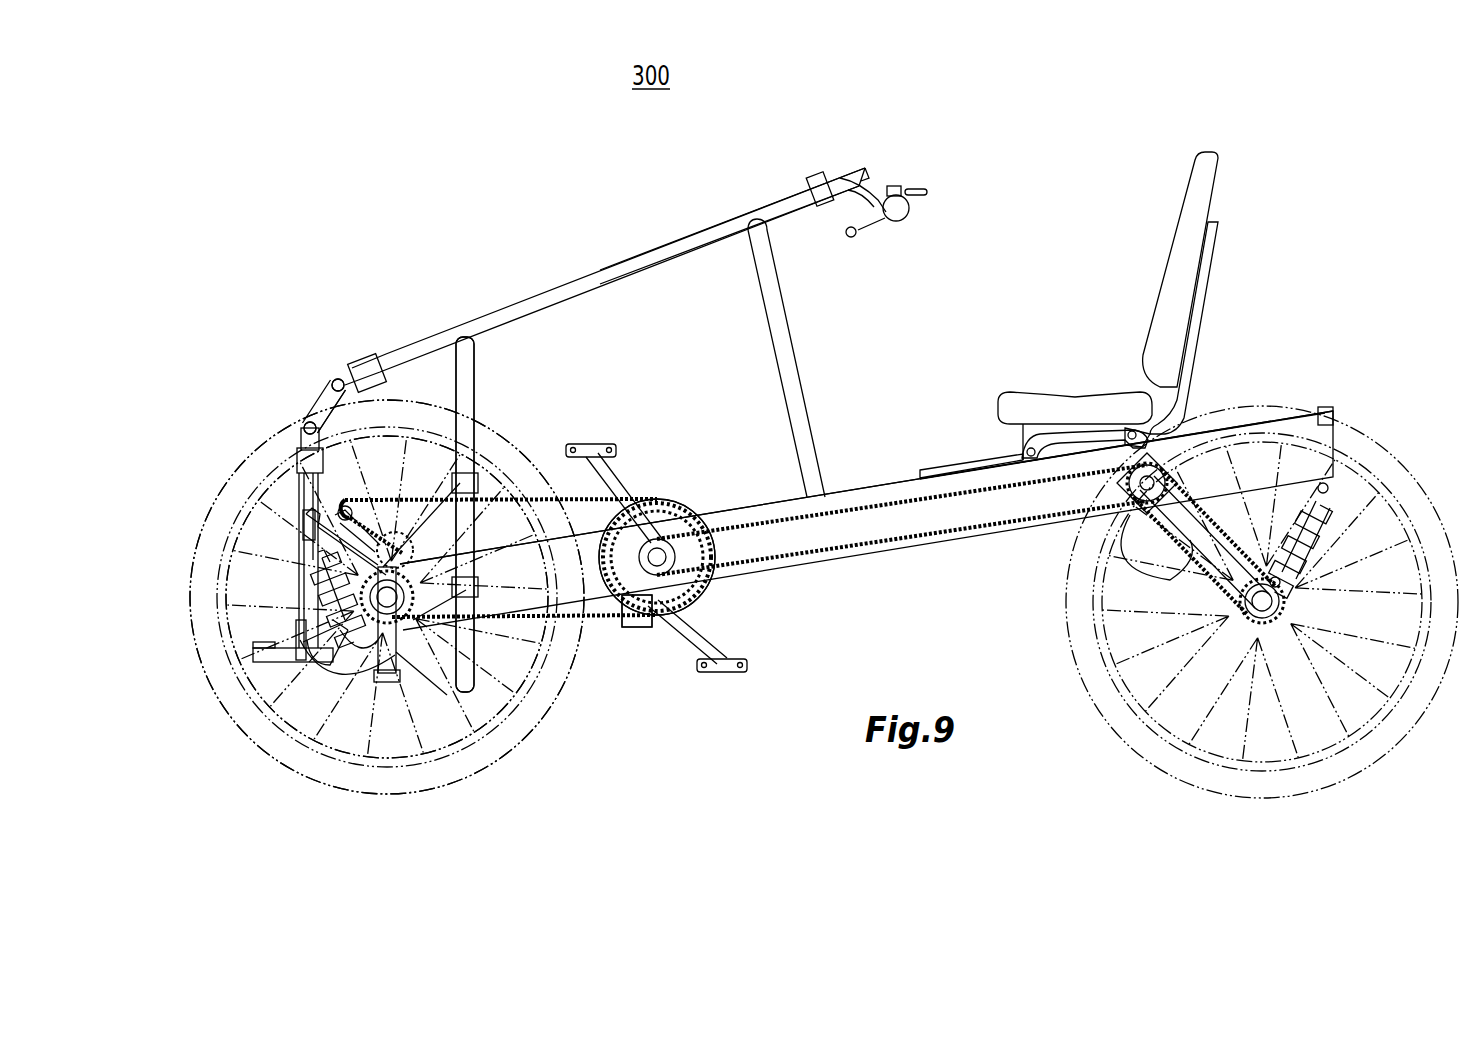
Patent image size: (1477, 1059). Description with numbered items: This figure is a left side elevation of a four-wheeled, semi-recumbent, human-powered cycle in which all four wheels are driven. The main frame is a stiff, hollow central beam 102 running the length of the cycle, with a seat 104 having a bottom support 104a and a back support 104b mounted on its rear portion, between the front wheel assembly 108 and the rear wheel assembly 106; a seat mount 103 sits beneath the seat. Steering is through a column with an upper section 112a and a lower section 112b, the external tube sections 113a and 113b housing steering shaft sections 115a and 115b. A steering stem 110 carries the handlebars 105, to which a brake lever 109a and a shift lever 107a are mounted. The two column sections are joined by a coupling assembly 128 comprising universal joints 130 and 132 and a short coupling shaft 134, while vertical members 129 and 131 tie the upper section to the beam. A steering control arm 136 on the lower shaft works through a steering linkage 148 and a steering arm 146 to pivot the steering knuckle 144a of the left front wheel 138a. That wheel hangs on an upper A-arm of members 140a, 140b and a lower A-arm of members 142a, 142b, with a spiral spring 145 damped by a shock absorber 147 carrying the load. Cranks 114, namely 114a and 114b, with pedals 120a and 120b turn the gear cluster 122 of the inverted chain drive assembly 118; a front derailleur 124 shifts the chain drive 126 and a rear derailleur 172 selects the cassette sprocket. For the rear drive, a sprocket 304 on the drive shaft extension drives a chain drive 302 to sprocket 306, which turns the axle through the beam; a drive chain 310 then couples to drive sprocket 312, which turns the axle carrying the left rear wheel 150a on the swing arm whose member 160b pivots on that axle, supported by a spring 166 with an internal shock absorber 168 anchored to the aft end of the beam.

The central beam 102 is at (893, 483).
The seat mount 103 is at (970, 462).
The seat 104 is at (1098, 289).
The bottom support 104a is at (1045, 392).
The back support 104b is at (1178, 220).
The handlebars 105 is at (922, 222).
The rear wheel assembly 106 is at (1378, 430).
The lever 107a is at (920, 188).
The front wheel assembly 108 is at (228, 284).
The lever 109a is at (878, 235).
The steering stem 110 is at (848, 165).
The upper section of steering column 112a is at (522, 278).
The lower section of steering column 112b is at (298, 512).
The upper steering tube section 113a is at (665, 240).
The lower steering tube section 113b is at (296, 483).
The cranks 114 is at (665, 452).
The crank 114a is at (630, 480).
The crank 114b is at (715, 636).
The upper section of steering shaft 115a is at (342, 378).
The lower section of steering shaft 115b is at (298, 445).
The chain drive assembly 118 is at (596, 643).
The pedal 120a is at (603, 444).
The pedal 120b is at (740, 680).
The gear cluster 122 is at (720, 598).
The front derailleur 124 is at (640, 632).
The chain drive 126 is at (572, 487).
The steering shaft coupling assembly 128 is at (214, 320).
The vertical member 129 is at (800, 335).
The universal joint 130 is at (332, 382).
The vertical member 131 is at (478, 385).
The universal joint 132 is at (308, 417).
The coupling shaft 134 is at (318, 400).
The steering control arm 136 is at (283, 640).
The left front wheel 138a is at (306, 777).
The upper A-arm member 140a is at (300, 548).
The upper A-arm member 140b is at (368, 487).
The lower A-arm member 142a is at (330, 712).
The lower A-arm member 142b is at (460, 650).
The steering knuckle 144a is at (290, 627).
The spring 145 is at (310, 594).
The steering arm 146 is at (302, 756).
The shock absorber 147 is at (310, 568).
The steering linkage 148 is at (260, 650).
The left rear wheel 150a is at (1100, 735).
The swing arm member 160b is at (1185, 540).
The spring 166 is at (1345, 510).
The shock absorber 168 is at (1330, 555).
The rear derailleur 172 is at (400, 370).
The chain drive 302 is at (863, 557).
The sprocket 304 is at (436, 692).
The sprocket 306 is at (1110, 515).
The drive chain 310 is at (1223, 613).
The drive sprocket 312 is at (1290, 635).